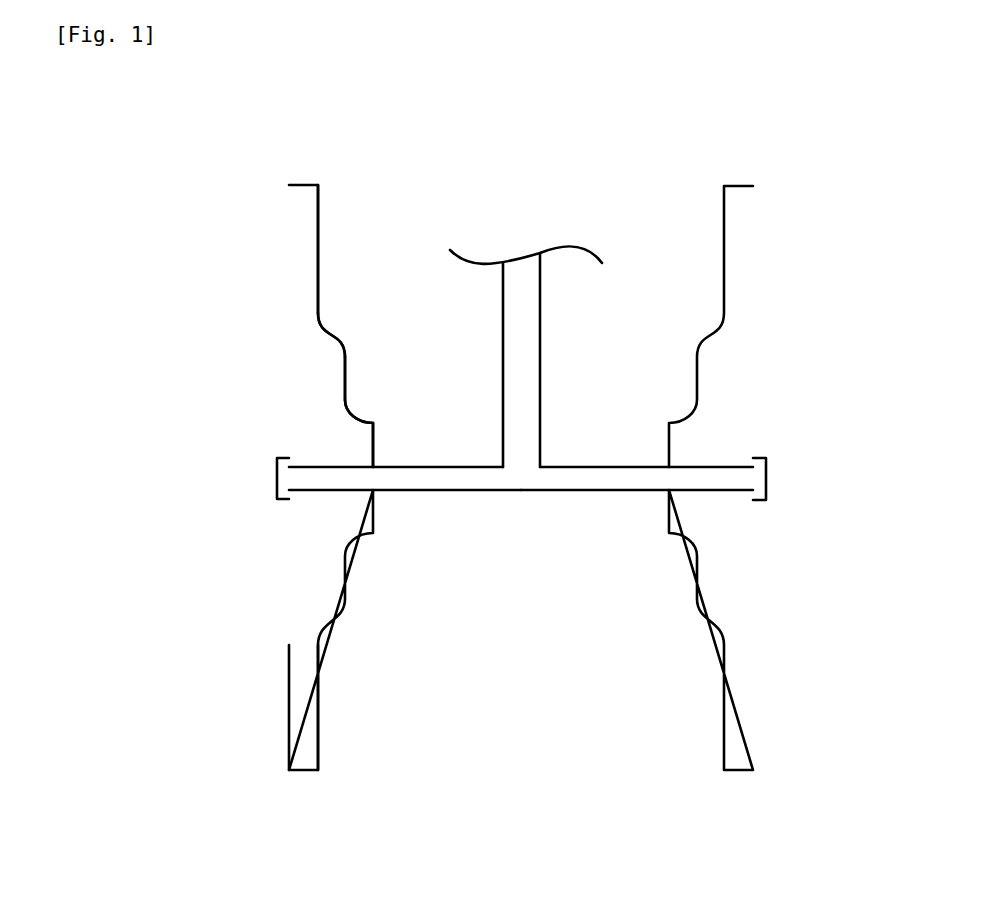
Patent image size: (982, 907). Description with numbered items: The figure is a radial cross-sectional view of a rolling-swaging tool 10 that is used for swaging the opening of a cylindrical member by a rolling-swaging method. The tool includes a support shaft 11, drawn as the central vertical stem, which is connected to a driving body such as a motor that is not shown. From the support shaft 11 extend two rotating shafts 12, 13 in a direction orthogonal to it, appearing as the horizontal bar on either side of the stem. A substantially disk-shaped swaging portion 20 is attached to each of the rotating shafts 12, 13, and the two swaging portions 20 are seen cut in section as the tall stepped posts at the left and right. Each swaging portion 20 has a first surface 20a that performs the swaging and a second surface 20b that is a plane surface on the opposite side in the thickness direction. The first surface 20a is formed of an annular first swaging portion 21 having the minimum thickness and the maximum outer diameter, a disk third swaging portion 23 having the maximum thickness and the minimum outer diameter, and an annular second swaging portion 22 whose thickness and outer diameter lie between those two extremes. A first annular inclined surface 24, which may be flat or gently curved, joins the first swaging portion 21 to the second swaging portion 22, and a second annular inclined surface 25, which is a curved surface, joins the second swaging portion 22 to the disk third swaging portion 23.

The rolling-swaging tool 10 is at (622, 159).
The support shaft 11 is at (527, 343).
The rotating shaft 12 is at (445, 477).
The rotating shaft 13 is at (590, 477).
The swaging portion 20 is at (266, 326).
The first surface 20a is at (318, 730).
The second surface 20b is at (288, 718).
The annular first swaging portion 21 is at (305, 228).
The annular second swaging portion 22 is at (345, 372).
The disk third swaging portion 23 is at (376, 437).
The first annular inclined surface 24 is at (322, 320).
The second annular inclined surface 25 is at (353, 410).